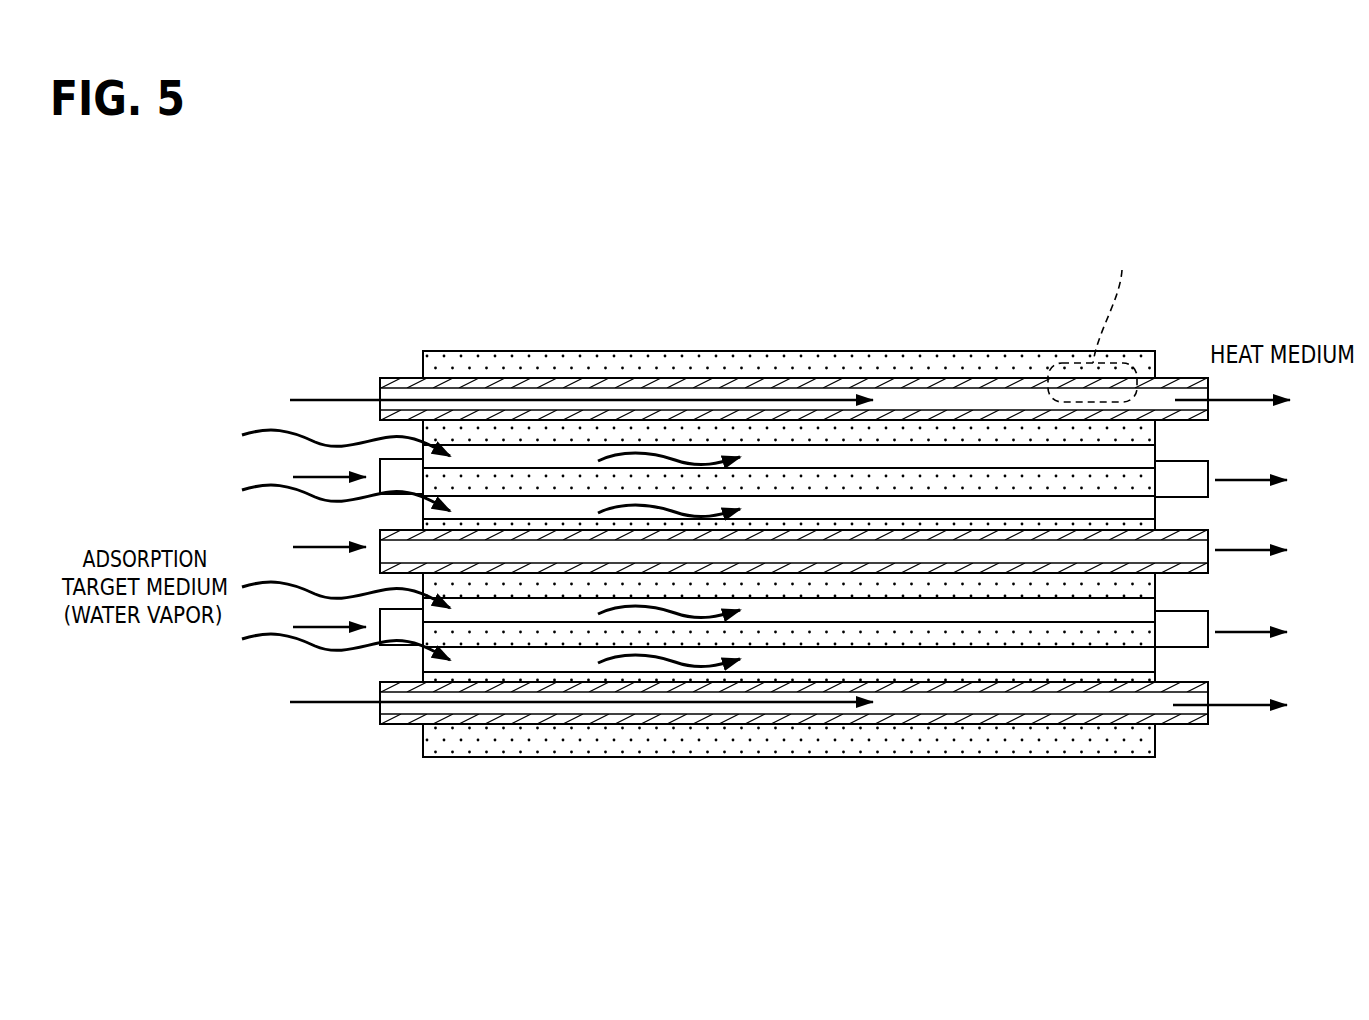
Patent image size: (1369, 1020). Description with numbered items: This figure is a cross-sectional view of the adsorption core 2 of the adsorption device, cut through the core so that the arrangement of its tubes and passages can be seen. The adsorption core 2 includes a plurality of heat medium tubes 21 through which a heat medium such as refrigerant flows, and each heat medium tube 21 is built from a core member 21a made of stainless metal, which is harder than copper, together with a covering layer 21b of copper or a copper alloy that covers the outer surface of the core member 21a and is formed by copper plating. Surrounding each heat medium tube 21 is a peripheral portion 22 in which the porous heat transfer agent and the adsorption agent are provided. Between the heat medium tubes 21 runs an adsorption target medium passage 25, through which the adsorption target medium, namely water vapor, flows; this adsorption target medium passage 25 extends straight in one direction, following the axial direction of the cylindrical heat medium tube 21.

The adsorption core 2 is at (838, 519).
The heat medium tube 21 is at (962, 378).
The core member 21a is at (1197, 686).
The covering layer 21b is at (1177, 725).
The peripheral portion 22 is at (915, 430).
The adsorption target medium passage 25 is at (977, 448).